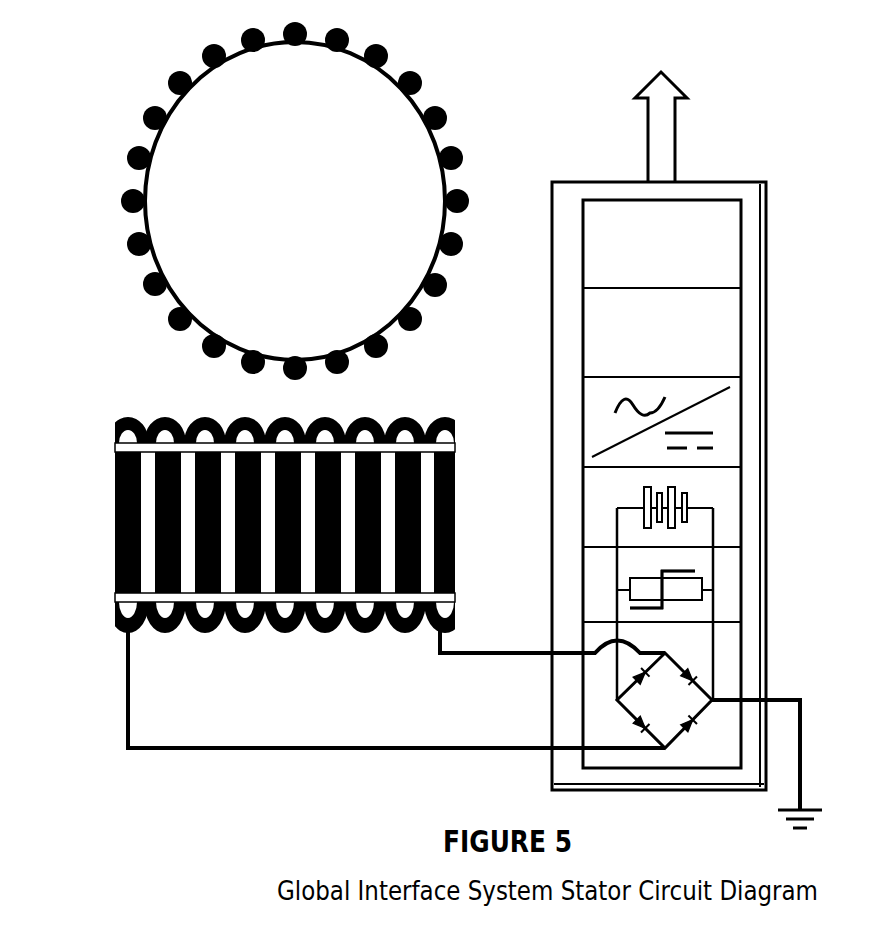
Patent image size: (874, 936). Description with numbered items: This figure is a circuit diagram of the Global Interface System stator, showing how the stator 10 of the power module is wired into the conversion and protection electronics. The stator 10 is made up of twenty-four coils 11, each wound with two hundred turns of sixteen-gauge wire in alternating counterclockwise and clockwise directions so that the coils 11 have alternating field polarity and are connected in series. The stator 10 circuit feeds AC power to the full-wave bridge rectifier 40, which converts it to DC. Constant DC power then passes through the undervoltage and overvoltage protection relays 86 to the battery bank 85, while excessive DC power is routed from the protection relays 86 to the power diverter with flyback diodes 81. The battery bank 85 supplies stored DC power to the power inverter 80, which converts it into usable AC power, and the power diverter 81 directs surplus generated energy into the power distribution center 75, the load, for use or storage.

The stator 10 is at (452, 445).
The coils 11 is at (130, 150).
The full-wave bridge rectifier 40 is at (712, 695).
The power inverter 80 is at (740, 428).
The battery bank 85 is at (740, 518).
The power distribution center 75 is at (740, 605).
The power diverter with flyback diodes 81 is at (740, 605).
The undervoltage and overvoltage protection relays 86 is at (740, 605).